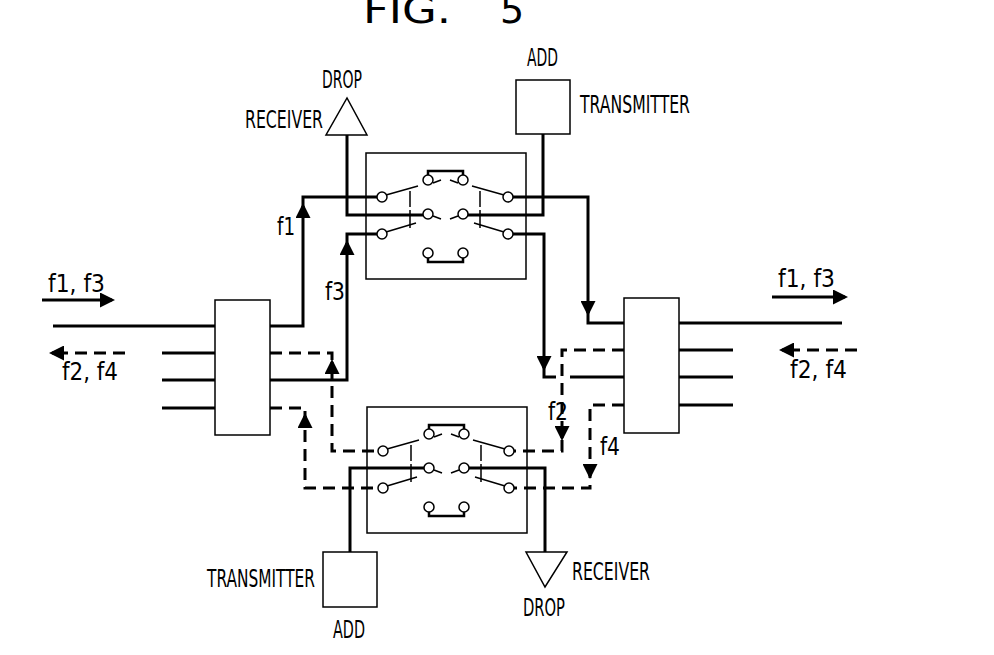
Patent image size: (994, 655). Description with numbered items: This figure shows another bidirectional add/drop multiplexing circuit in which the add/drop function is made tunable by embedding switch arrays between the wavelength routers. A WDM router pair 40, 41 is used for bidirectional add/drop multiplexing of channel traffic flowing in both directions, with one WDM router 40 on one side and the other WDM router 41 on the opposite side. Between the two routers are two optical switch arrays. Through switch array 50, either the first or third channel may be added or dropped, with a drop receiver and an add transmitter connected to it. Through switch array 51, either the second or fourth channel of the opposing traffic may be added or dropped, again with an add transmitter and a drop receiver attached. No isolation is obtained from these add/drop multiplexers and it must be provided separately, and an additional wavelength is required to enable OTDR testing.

The WDM router 40 is at (227, 435).
The WDM router 41 is at (651, 433).
The switch array 50 is at (467, 279).
The switch array 51 is at (420, 407).